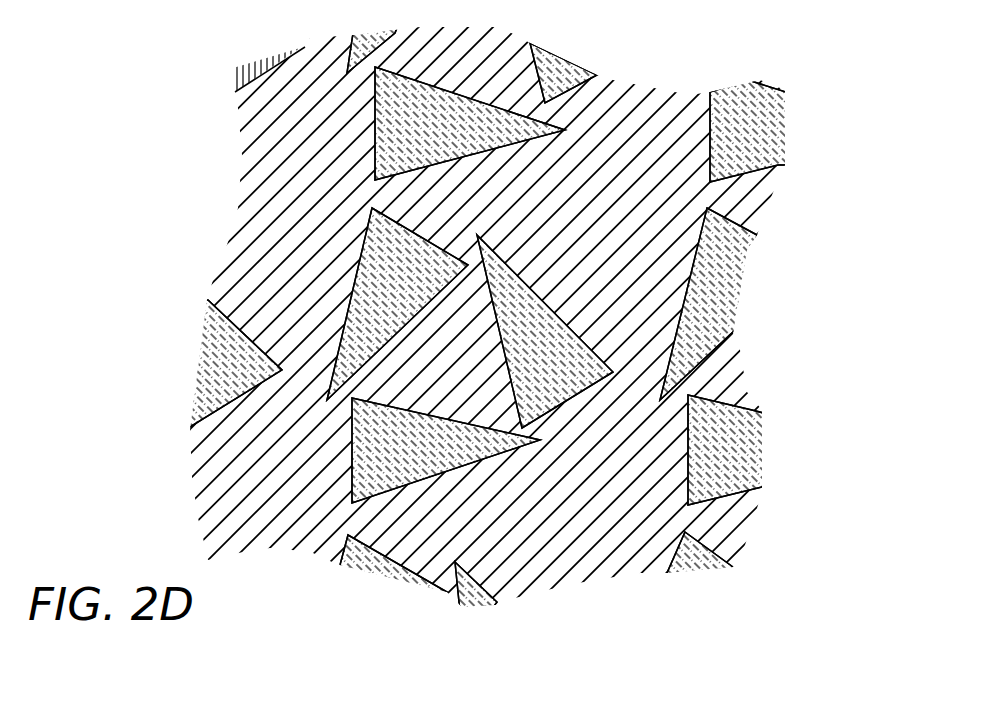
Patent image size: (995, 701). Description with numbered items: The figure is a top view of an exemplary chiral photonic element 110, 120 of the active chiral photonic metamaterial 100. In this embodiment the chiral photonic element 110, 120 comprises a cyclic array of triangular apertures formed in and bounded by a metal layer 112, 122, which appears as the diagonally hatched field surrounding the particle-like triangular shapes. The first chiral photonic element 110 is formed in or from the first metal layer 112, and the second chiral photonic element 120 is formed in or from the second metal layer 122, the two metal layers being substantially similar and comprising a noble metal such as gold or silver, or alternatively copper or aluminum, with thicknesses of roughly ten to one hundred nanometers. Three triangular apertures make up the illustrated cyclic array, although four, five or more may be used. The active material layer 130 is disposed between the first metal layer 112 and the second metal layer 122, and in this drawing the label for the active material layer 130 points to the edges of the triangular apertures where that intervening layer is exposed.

The active chiral photonic metamaterial 100 is at (750, 40).
The first chiral photonic element 110 is at (286, 258).
The second chiral photonic element 120 is at (286, 258).
The first metal layer 112 is at (497, 325).
The second metal layer 122 is at (652, 231).
The active material layer 130 is at (471, 316).